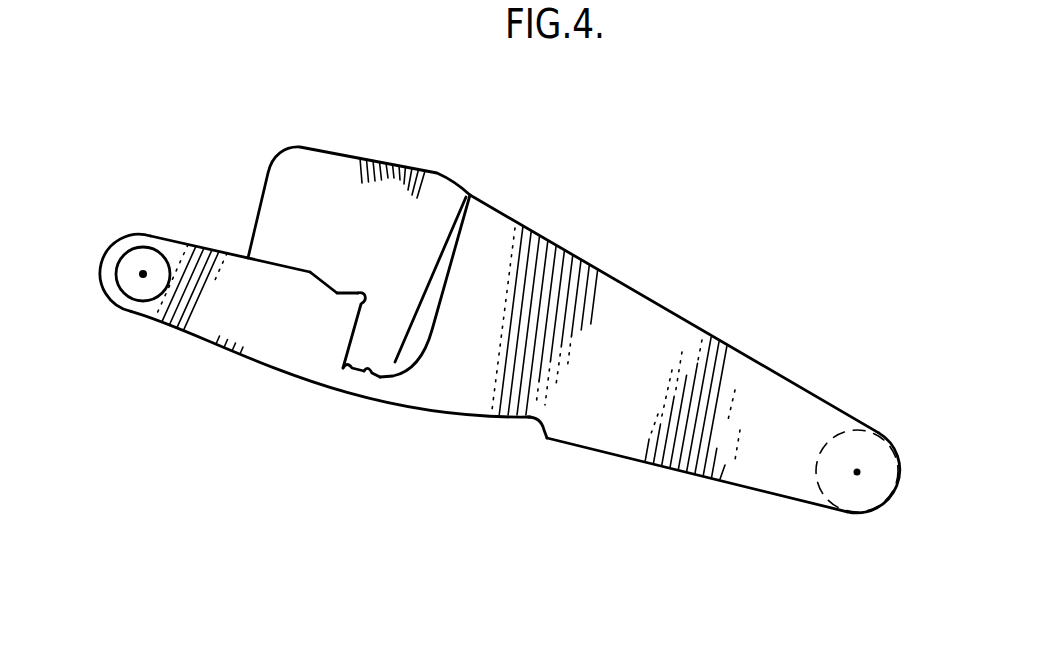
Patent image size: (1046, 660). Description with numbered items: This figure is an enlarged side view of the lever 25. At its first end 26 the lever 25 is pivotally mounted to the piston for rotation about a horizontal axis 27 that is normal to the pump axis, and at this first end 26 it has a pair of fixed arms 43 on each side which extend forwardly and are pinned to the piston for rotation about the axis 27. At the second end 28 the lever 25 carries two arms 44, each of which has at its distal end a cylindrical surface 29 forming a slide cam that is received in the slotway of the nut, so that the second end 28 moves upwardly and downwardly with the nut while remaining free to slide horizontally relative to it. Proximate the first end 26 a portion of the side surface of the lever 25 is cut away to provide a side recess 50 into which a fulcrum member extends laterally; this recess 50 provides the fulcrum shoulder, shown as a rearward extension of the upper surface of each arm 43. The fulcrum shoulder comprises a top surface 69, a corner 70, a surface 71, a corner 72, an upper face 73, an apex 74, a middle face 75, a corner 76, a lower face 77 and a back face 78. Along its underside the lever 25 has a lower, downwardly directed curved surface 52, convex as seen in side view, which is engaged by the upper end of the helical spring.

The lever 25 is at (525, 208).
The first end 26 is at (109, 255).
The horizontal axis 27 is at (143, 272).
The second end 28 is at (870, 514).
The cylindrical surfaces 29 is at (896, 449).
The fixed arms 43 is at (216, 318).
The arms 44 is at (769, 456).
The side recess 50 is at (357, 157).
The curved surface 52 is at (402, 412).
The top surface 69 is at (288, 267).
The corner 70 is at (318, 278).
The surface 71 is at (332, 288).
The corner 72 is at (345, 292).
The upper face 73 is at (353, 292).
The apex 74 is at (357, 311).
The middle face 75 is at (354, 330).
The corner 76 is at (351, 371).
The lower face 77 is at (370, 374).
The back face 78 is at (420, 302).